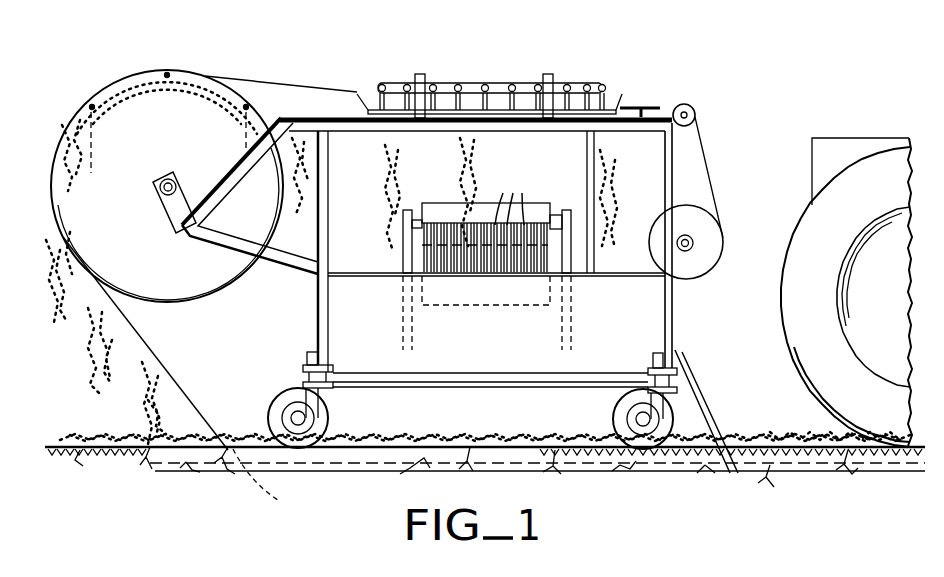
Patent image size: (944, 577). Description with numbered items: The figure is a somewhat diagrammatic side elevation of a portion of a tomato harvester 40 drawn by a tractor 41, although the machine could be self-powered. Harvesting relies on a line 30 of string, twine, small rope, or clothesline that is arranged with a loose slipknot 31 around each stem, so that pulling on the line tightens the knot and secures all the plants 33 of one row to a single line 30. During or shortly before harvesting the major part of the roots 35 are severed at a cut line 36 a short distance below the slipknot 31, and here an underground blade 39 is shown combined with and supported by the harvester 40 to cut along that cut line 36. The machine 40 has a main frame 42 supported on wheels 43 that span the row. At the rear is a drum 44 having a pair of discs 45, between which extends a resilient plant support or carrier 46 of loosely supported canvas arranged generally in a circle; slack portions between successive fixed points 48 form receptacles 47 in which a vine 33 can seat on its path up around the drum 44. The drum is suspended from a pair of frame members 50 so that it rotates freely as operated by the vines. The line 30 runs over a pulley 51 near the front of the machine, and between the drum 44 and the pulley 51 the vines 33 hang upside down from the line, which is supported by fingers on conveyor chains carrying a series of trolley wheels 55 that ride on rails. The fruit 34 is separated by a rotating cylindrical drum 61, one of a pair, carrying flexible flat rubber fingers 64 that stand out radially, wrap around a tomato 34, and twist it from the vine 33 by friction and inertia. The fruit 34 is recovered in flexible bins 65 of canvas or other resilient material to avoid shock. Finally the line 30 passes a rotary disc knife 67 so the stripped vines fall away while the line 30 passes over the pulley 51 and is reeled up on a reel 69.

The line 30 is at (558, 456).
The slipknot 31 is at (393, 475).
The plants 33 is at (226, 455).
The tomatoes 34 is at (373, 197).
The roots 35 is at (278, 500).
The cut line 36 is at (186, 468).
The blade 39 is at (742, 470).
The harvester 40 is at (716, 136).
The tractor 41 is at (880, 137).
The main frame 42 is at (552, 76).
The wheels 43 is at (612, 419).
The drum 44 is at (159, 70).
The discs 45 is at (105, 225).
The plant support or carrier 46 is at (252, 83).
The receptacles 47 is at (121, 80).
The fixed points 48 is at (167, 77).
The frame members 50 is at (235, 176).
The pulley 51 is at (696, 108).
The trolley wheels 55 is at (510, 85).
The cylindrical drum 61 is at (453, 205).
The fingers 64 is at (514, 198).
The flexible bins 65 is at (380, 325).
The rotary disc knife 67 is at (648, 106).
The reel 69 is at (701, 268).